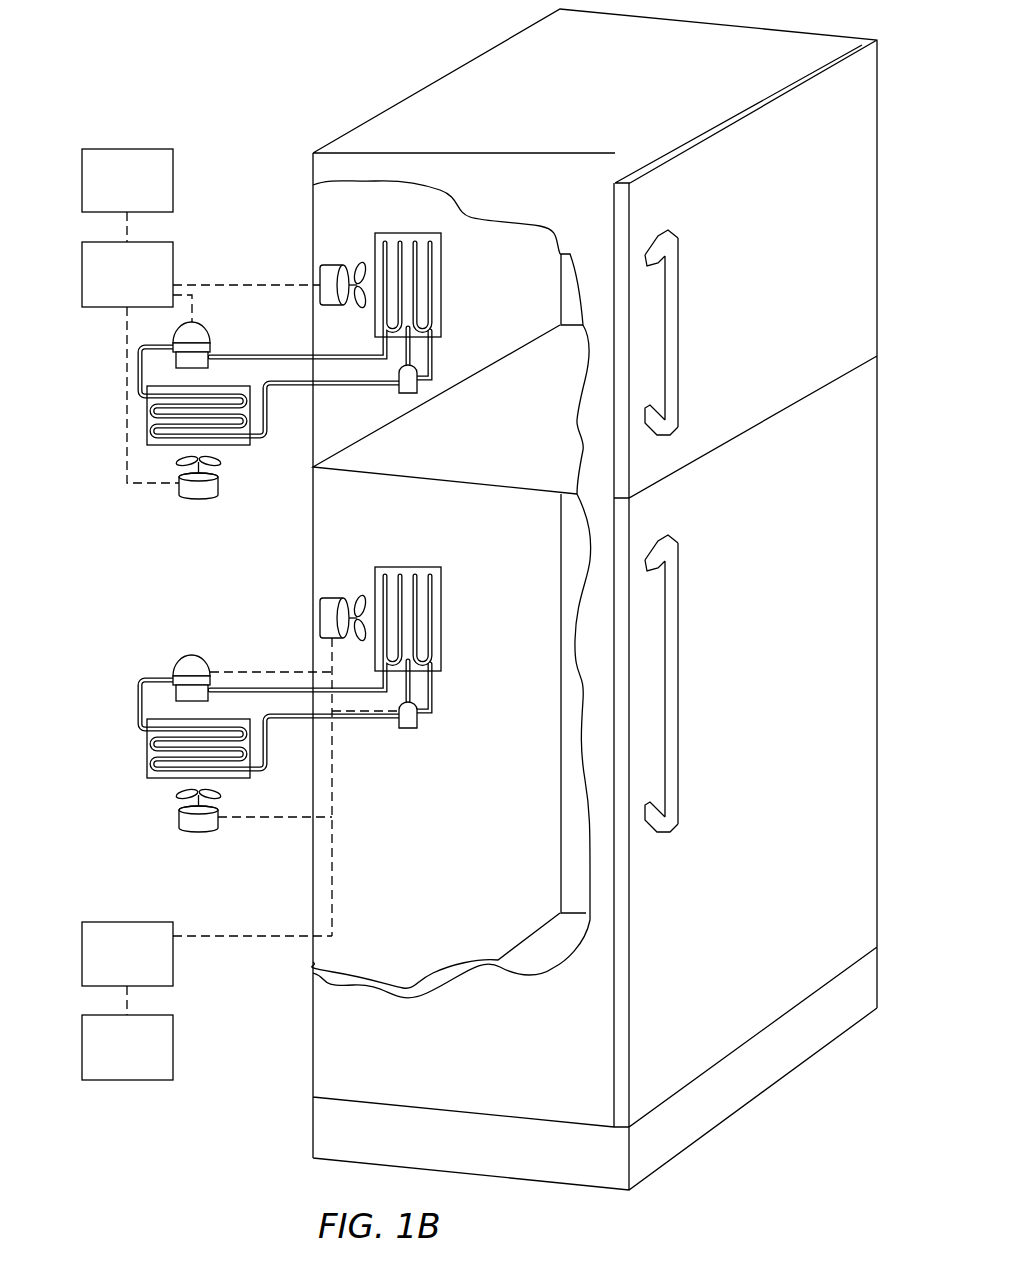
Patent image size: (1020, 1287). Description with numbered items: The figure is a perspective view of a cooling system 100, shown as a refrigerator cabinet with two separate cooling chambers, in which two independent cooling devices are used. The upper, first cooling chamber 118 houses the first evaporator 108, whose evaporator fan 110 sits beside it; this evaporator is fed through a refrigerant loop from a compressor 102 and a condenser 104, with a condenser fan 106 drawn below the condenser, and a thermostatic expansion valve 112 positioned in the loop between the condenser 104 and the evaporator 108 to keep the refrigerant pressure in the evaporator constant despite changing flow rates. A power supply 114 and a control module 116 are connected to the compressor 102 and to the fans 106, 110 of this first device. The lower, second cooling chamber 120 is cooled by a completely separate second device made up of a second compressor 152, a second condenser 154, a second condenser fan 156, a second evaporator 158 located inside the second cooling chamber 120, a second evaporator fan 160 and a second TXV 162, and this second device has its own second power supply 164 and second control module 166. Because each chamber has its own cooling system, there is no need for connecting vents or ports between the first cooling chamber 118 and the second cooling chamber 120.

The cooling system 100 is at (450, 95).
The compressor 102 is at (200, 340).
The condenser 104 is at (235, 441).
The condenser fan 106 is at (200, 498).
The evaporator 108 is at (441, 275).
The evaporator fan 110 is at (331, 266).
The thermostatic expansion valve 112 is at (408, 393).
The power supply 114 is at (173, 173).
The control module 116 is at (173, 265).
The first cooling chamber 118 is at (812, 263).
The second cooling chamber 120 is at (820, 588).
The second compressor 152 is at (198, 664).
The second condenser 154 is at (167, 773).
The second condenser fan 156 is at (200, 828).
The second evaporator 158 is at (441, 608).
The second evaporator fan 160 is at (331, 598).
The second TXV 162 is at (408, 728).
The second power supply 164 is at (173, 1035).
The second control module 166 is at (173, 966).